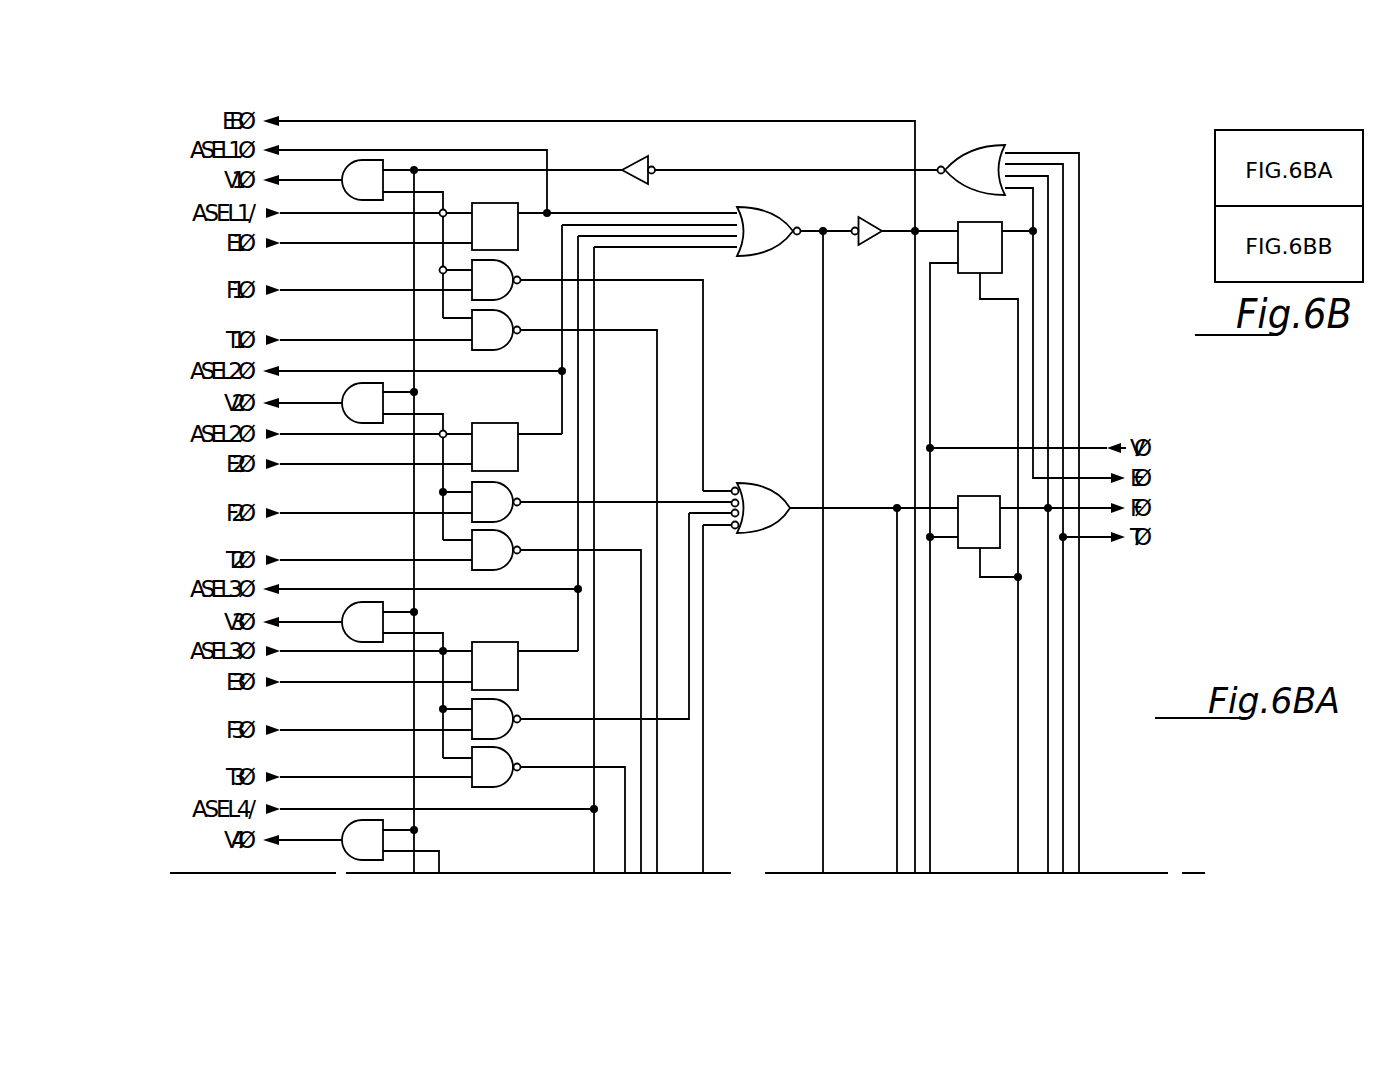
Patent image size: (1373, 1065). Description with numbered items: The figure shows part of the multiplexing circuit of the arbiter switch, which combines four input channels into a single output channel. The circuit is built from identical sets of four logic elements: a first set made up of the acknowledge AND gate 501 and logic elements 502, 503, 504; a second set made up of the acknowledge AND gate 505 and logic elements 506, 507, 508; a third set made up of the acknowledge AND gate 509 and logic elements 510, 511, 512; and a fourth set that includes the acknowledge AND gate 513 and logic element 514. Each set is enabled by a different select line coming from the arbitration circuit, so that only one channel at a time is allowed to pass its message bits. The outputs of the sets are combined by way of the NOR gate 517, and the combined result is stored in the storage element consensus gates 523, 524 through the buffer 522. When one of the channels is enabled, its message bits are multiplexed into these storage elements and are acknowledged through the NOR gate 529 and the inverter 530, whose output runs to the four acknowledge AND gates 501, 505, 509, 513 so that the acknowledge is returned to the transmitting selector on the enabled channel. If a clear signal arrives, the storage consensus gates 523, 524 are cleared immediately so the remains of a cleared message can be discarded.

The acknowledge AND gate 501 is at (342, 173).
The logic element 502 is at (493, 205).
The logic element 503 is at (510, 274).
The logic element 504 is at (513, 330).
The acknowledge AND gate 505 is at (342, 396).
The logic element 506 is at (494, 426).
The logic element 507 is at (510, 496).
The logic element 508 is at (510, 546).
The acknowledge AND gate 509 is at (342, 616).
The logic element 510 is at (493, 643).
The logic element 511 is at (514, 712).
The logic element 512 is at (509, 766).
The acknowledge AND gate 513 is at (342, 834).
The logic element 514 is at (750, 484).
The NOR gate 517 is at (762, 248).
The buffer 522 is at (870, 248).
The storage element consensus gate 523 is at (968, 275).
The storage element consensus gate 524 is at (974, 497).
The NOR gate 529 is at (972, 152).
The inverter 530 is at (645, 163).